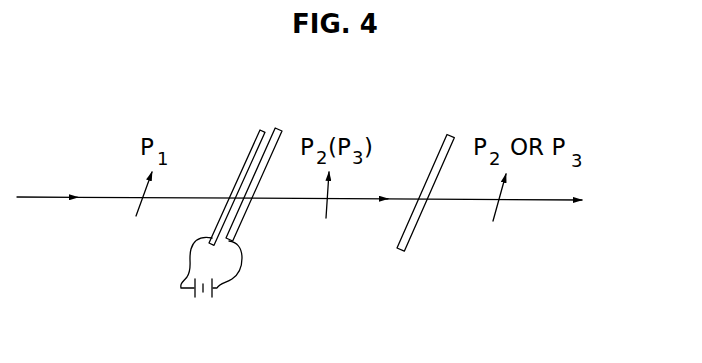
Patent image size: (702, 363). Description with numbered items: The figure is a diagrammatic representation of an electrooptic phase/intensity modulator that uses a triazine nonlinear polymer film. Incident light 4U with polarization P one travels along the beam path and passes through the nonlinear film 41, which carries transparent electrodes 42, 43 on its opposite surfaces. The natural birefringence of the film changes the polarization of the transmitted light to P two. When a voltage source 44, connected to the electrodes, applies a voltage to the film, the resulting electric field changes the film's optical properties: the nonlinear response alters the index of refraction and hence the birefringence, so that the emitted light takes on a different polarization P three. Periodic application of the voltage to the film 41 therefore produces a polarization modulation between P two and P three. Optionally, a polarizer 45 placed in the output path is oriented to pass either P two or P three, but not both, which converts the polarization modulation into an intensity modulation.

The incident light 4U is at (105, 196).
The nonlinear film 41 is at (237, 163).
The transparent electrode 42 is at (216, 230).
The transparent electrode 43 is at (243, 226).
The voltage source 44 is at (215, 293).
The polarizer 45 is at (409, 242).